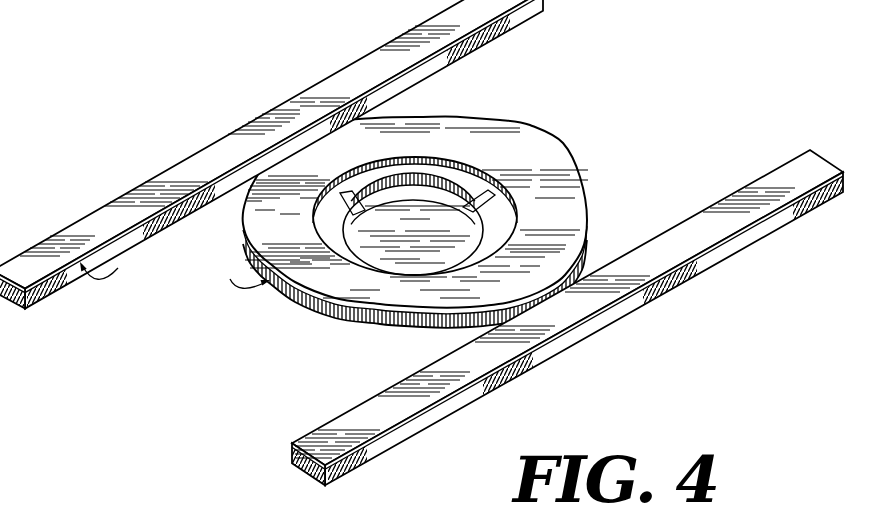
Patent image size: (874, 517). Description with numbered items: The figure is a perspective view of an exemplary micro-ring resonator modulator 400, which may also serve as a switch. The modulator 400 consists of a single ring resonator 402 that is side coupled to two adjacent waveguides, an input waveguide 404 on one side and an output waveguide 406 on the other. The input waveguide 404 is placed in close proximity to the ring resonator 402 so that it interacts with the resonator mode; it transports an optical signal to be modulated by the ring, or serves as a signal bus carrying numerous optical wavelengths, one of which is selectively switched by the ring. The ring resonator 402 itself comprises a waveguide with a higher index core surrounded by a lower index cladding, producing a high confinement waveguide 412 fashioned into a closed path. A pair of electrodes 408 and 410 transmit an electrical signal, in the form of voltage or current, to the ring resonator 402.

The micro-ring resonator modulator 400 is at (643, 61).
The ring resonator 402 is at (357, 42).
The input waveguide 404 is at (557, 352).
The output waveguide 406 is at (197, 155).
The electrode 408 is at (522, 165).
The electrode 410 is at (427, 220).
The high confinement waveguide 412 is at (383, 333).